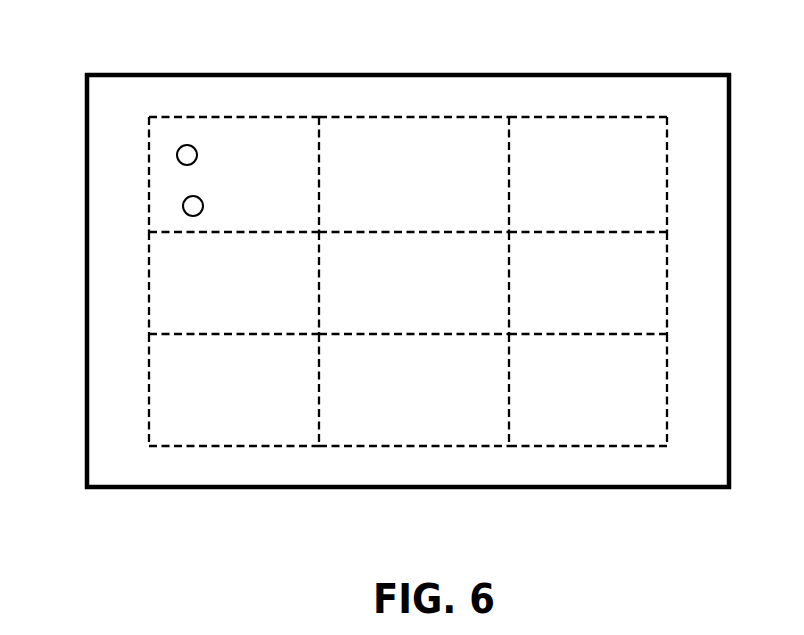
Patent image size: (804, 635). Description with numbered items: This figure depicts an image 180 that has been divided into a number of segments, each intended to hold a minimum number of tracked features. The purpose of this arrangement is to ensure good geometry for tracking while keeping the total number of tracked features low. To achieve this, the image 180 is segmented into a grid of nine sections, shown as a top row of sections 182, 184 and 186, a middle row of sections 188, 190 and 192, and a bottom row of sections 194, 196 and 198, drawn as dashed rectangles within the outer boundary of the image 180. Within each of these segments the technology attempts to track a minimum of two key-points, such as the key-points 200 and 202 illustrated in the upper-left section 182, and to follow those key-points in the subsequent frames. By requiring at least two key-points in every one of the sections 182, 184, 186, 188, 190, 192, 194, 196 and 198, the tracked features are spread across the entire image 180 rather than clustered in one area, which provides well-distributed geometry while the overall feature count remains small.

The image 180 is at (244, 561).
The section 182 is at (252, 125).
The section 184 is at (475, 125).
The section 186 is at (617, 125).
The section 188 is at (263, 327).
The section 190 is at (367, 240).
The section 192 is at (618, 328).
The section 194 is at (165, 440).
The section 196 is at (410, 437).
The section 198 is at (530, 437).
The key-point 200 is at (178, 146).
The key-point 202 is at (183, 206).